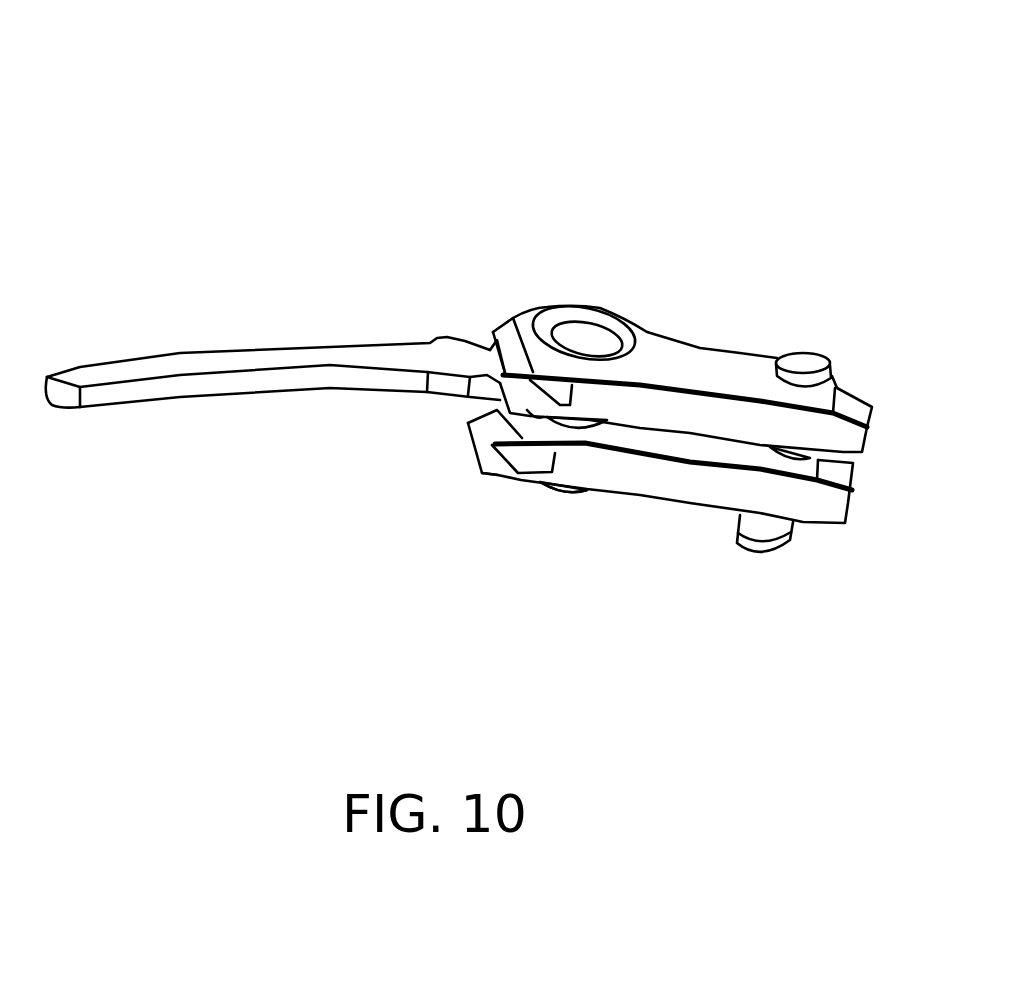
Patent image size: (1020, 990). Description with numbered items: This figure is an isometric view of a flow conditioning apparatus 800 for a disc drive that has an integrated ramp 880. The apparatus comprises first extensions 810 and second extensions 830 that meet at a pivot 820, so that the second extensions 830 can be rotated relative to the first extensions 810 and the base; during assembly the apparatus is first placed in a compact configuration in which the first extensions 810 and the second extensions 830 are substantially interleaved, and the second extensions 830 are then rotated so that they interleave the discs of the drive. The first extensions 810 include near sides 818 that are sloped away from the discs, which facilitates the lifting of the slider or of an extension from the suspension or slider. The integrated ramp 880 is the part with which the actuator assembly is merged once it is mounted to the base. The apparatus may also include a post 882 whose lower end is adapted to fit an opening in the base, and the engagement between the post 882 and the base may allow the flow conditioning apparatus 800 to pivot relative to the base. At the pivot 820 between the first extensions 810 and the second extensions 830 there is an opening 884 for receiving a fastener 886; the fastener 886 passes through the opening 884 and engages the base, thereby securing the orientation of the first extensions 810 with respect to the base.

The flow conditioning apparatus 800 is at (275, 125).
The first extensions 810 is at (533, 330).
The near sides 818 is at (500, 333).
The pivot 820 is at (588, 337).
The second extensions 830 is at (193, 360).
The integrated ramp 880 is at (488, 413).
The post 882 is at (793, 532).
The opening 884 is at (640, 345).
The fastener 886 is at (568, 493).